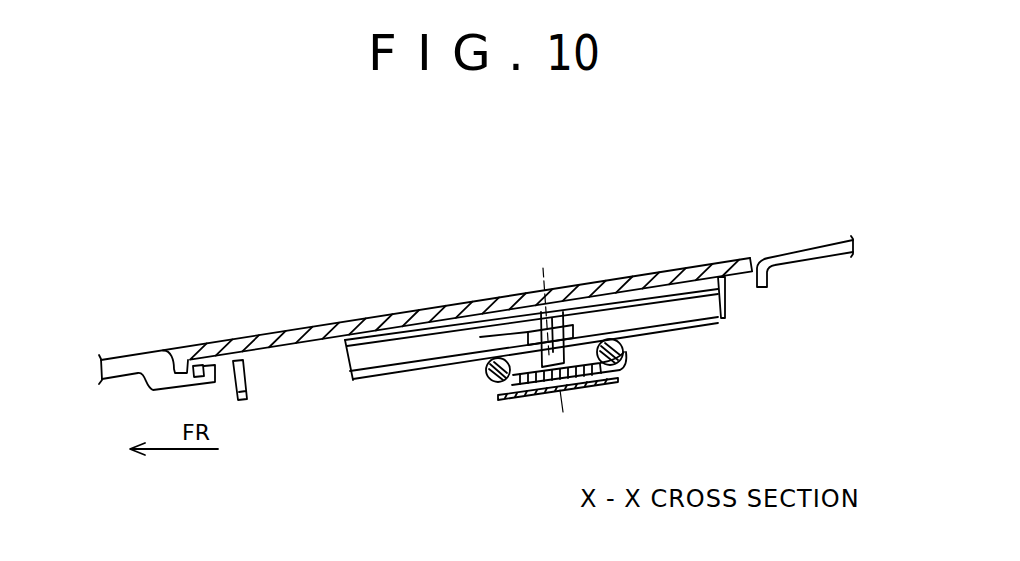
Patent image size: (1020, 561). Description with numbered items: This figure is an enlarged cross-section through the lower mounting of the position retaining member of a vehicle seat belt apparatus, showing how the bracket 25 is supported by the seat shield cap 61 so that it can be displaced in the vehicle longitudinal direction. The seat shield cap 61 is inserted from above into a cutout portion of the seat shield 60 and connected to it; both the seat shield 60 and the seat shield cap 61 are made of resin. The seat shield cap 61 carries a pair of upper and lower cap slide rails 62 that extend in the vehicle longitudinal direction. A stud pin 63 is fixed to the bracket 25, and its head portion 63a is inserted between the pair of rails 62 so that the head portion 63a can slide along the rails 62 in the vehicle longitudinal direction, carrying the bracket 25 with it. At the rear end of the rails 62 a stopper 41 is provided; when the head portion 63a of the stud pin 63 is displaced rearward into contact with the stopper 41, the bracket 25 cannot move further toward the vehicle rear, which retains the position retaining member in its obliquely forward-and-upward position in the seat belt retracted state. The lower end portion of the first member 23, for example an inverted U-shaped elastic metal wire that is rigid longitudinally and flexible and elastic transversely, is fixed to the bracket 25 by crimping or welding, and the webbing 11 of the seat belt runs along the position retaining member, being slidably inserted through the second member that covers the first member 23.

The seat shield 60 is at (145, 365).
The seat shield cap 61 is at (659, 273).
The cap slide rails 62 is at (372, 385).
The stud pin 63 is at (542, 333).
The head portion 63a is at (563, 312).
The stopper 41 is at (728, 305).
The bracket 25 is at (623, 370).
The first member 23 is at (487, 388).
The webbing 11 is at (603, 390).